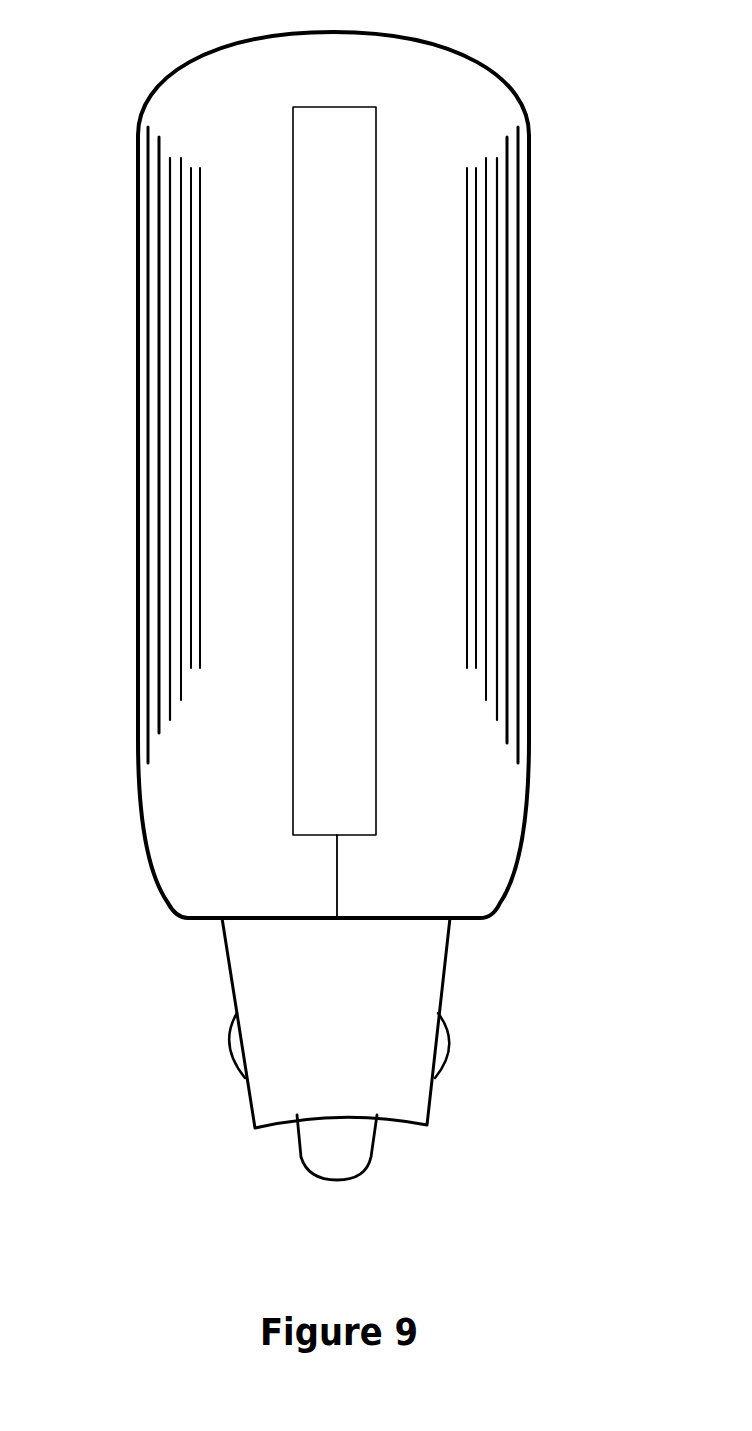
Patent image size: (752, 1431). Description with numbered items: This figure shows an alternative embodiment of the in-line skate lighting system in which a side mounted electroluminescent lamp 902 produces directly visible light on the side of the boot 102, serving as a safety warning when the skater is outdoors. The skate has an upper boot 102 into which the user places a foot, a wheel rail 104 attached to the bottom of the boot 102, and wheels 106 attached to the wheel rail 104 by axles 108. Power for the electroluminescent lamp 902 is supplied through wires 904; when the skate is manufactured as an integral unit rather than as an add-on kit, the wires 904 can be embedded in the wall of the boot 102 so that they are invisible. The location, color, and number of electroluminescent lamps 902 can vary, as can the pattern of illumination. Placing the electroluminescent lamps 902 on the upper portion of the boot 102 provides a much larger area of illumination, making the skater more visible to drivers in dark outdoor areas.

The boot 102 is at (199, 97).
The wheel rail 104 is at (265, 940).
The wheels 106 is at (357, 1148).
The axles 108 is at (233, 1054).
The electroluminescent lamp 902 is at (325, 712).
The wires 904 is at (338, 888).